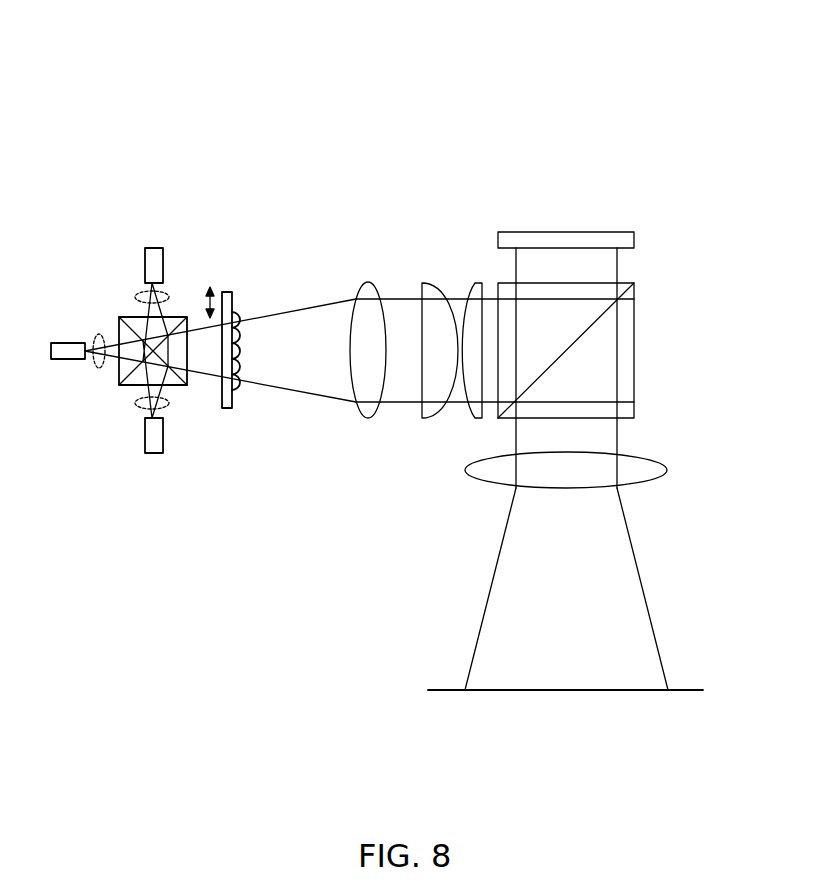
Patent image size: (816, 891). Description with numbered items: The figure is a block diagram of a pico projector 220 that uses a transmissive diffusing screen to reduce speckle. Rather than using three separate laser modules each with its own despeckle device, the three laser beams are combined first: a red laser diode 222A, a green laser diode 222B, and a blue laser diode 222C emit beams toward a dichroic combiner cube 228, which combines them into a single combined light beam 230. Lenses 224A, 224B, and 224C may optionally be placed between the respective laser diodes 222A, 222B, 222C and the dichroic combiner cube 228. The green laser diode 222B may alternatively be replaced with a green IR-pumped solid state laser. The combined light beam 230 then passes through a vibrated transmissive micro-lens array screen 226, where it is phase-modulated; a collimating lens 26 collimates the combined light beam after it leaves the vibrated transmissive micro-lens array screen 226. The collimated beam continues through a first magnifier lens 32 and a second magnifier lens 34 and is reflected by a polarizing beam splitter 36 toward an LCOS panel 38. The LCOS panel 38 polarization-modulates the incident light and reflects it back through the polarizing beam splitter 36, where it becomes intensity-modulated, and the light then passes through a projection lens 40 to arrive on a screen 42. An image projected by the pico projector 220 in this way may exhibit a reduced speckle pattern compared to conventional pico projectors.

The pico projector 220 is at (174, 50).
The red laser diode 222A is at (154, 248).
The green laser diode 222B is at (78, 343).
The blue laser diode 222C is at (147, 453).
The lens 224A is at (137, 302).
The lens 224B is at (98, 335).
The lens 224C is at (169, 405).
The dichroic combiner cube 228 is at (137, 317).
The combined light beam 230 is at (197, 373).
The vibrated transmissive micro-lens array screen 226 is at (232, 398).
The collimating lens 26 is at (362, 415).
The first magnifier lens 32 is at (432, 283).
The second magnifier lens 34 is at (472, 408).
The polarizing beam splitter 36 is at (634, 360).
The LCOS panel 38 is at (634, 240).
The projection lens 40 is at (662, 457).
The screen 42 is at (680, 690).